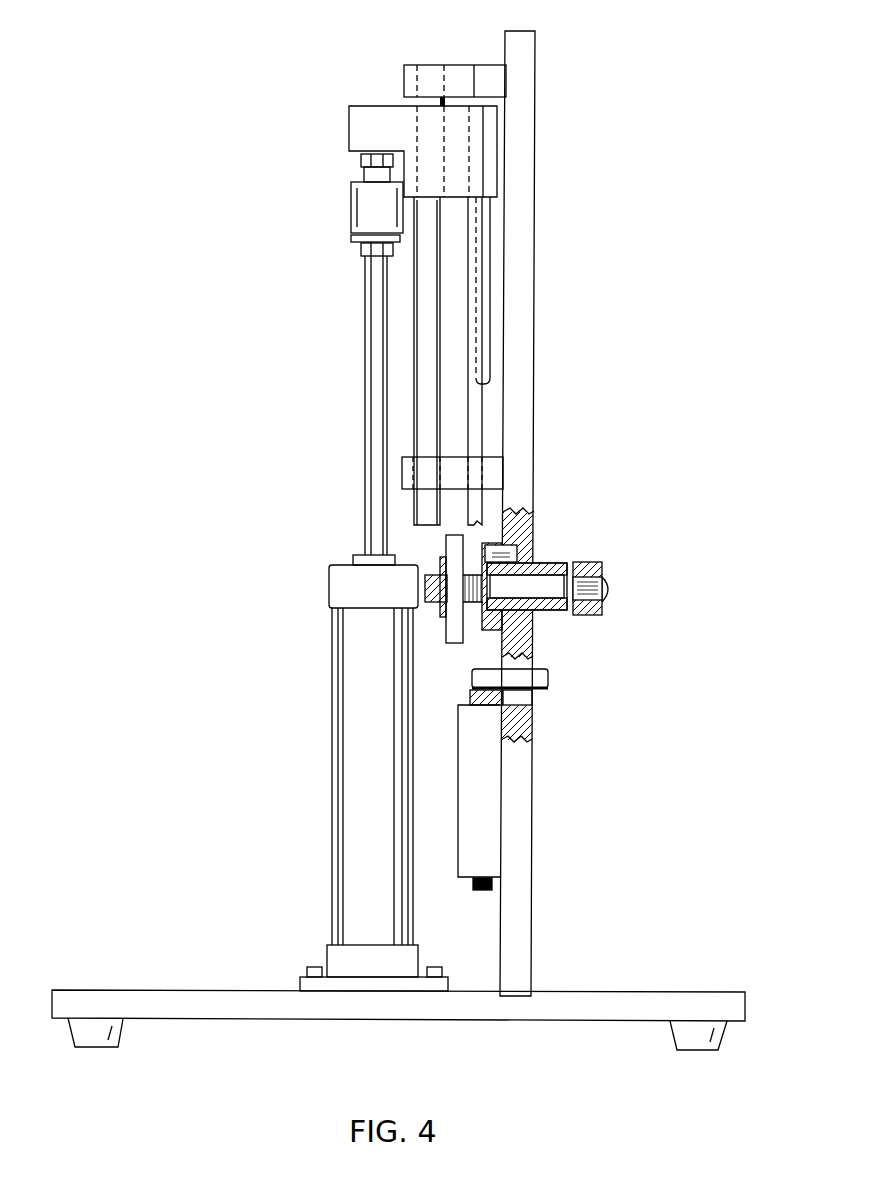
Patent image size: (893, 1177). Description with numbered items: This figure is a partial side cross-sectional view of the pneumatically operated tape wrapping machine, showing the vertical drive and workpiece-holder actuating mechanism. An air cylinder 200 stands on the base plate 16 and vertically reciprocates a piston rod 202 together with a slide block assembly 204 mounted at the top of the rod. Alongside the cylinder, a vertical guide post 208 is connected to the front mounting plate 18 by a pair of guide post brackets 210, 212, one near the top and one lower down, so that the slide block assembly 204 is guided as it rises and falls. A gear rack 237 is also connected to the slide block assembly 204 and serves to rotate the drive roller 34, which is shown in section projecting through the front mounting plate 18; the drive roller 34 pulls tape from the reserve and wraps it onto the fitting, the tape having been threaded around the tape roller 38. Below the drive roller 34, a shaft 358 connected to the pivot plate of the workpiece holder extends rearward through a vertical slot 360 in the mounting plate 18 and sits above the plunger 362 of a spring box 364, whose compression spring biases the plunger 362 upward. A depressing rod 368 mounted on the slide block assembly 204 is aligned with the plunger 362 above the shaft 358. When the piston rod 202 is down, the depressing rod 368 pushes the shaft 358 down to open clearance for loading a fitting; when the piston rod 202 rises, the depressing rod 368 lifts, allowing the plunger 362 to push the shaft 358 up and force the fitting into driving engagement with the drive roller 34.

The base plate 16 is at (197, 994).
The front mounting plate 18 is at (528, 224).
The drive roller 34 is at (600, 563).
The tape roller 38 is at (278, 401).
The air cylinder 200 is at (355, 767).
The piston rod 202 is at (365, 343).
The slide block assembly 204 is at (357, 122).
The vertical guide post 208 is at (420, 377).
The guide post bracket 210 is at (459, 70).
The guide post bracket 212 is at (492, 475).
The gear rack 237 is at (477, 422).
The shaft 358 is at (535, 678).
The vertical slot 360 is at (520, 698).
The plunger 362 is at (483, 682).
The spring box 364 is at (480, 788).
The depressing rod 368 is at (493, 313).